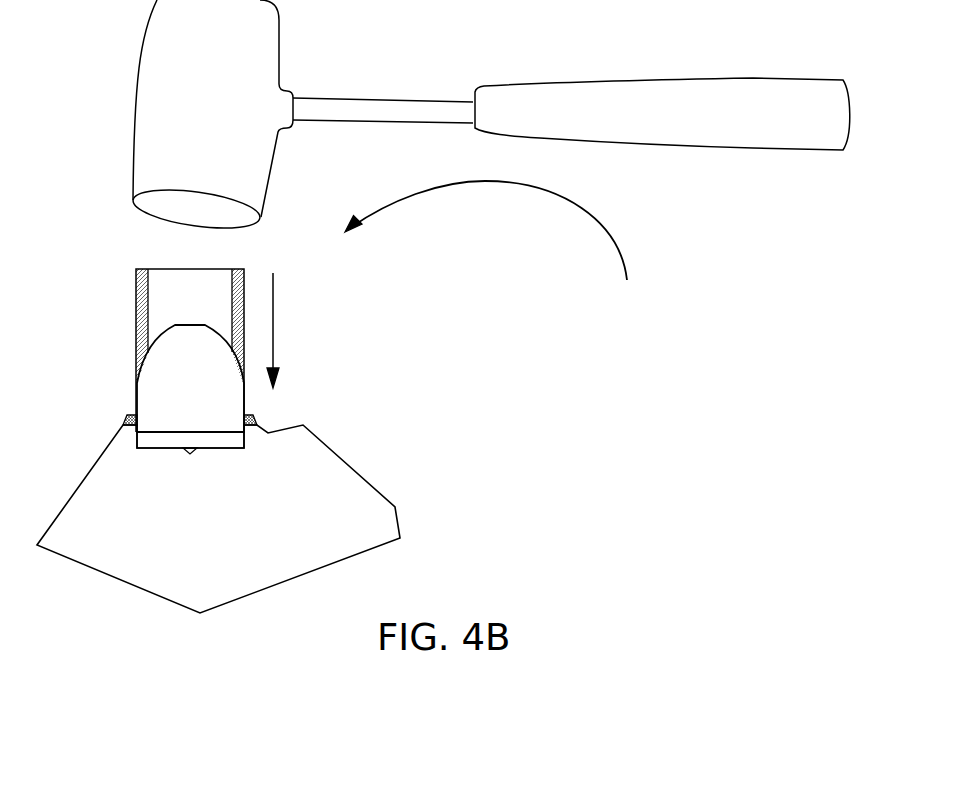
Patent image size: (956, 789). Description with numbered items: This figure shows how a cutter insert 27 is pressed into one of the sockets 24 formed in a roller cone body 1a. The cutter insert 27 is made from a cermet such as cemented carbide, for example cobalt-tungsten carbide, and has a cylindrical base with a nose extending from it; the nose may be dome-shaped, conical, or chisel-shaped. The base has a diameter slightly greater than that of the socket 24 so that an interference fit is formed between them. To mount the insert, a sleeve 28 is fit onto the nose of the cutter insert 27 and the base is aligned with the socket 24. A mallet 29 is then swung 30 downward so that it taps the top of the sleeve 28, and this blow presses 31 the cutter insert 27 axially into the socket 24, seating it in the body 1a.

The mallet 29 is at (421, 100).
The swinging of the mallet 30 is at (487, 182).
The pressing of the cutter insert 31 is at (275, 320).
The sleeve 28 is at (136, 321).
The cutter insert 27 is at (228, 400).
The socket 24 is at (243, 440).
The base / anvil 1a is at (108, 562).